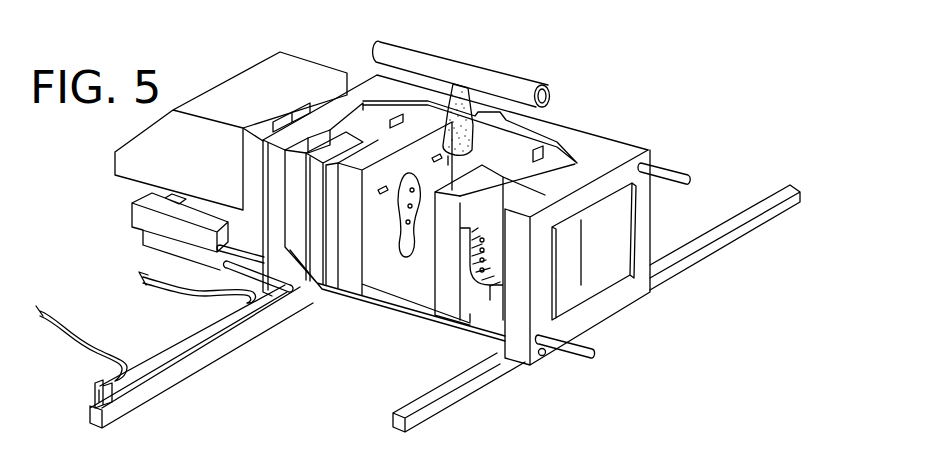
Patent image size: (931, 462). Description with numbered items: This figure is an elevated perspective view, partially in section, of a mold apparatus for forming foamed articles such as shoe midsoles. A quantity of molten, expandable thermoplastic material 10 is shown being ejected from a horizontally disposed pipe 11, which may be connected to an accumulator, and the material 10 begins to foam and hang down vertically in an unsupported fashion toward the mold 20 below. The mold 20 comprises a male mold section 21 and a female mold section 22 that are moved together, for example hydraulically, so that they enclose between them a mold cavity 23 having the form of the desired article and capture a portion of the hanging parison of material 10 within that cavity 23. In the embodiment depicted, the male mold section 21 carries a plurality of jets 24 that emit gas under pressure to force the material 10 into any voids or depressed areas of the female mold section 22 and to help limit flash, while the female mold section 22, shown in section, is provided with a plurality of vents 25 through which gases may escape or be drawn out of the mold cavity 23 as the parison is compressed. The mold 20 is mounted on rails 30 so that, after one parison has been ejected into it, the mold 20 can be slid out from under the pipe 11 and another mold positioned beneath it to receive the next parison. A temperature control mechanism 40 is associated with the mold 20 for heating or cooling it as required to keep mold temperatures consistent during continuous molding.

The thermoplastic material 10 is at (543, 126).
The pipe 11 is at (497, 72).
The mold 20 is at (622, 138).
The male mold section 21 is at (390, 220).
The female mold section 22 is at (471, 250).
The mold cavity 23 is at (398, 226).
The jets 24 is at (416, 253).
The vents 25 is at (483, 262).
The rails 30 is at (754, 211).
The temperature control mechanism 40 is at (570, 260).